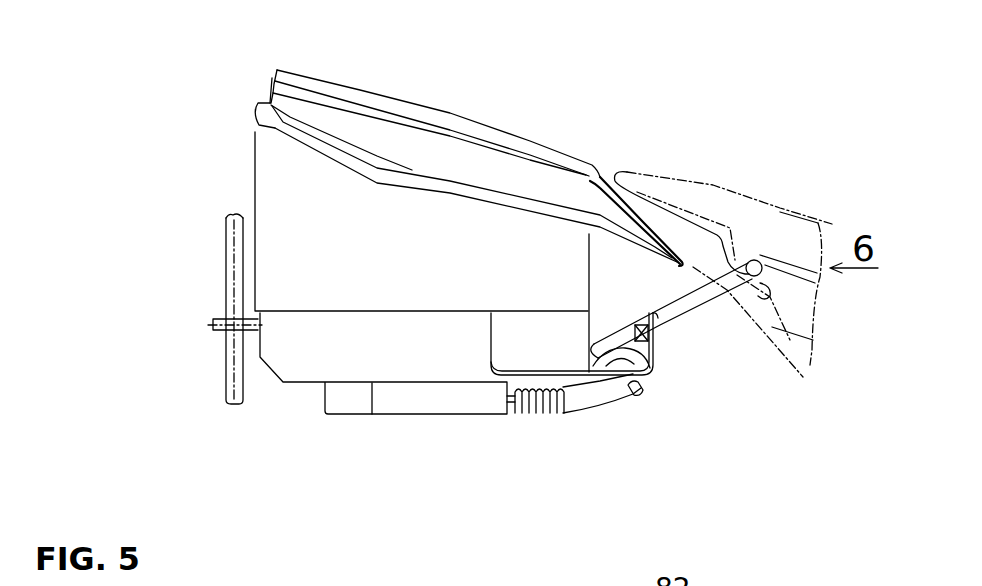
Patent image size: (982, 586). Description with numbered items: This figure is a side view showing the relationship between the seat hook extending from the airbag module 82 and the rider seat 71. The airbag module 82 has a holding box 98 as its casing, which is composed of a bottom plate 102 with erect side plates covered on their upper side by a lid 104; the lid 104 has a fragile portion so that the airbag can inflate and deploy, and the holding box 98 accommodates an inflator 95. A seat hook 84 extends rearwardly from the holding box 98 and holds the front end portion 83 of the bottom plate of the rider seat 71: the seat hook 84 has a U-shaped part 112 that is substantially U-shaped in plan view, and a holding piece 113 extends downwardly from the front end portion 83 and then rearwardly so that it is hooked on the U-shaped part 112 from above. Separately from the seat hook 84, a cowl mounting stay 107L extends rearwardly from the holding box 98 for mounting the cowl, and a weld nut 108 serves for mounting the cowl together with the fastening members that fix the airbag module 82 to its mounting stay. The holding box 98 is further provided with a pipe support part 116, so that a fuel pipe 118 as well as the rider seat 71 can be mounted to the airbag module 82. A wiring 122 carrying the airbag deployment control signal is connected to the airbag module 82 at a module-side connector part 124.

The airbag module 82 is at (589, 112).
The lid 104 is at (450, 118).
The holding box 98 is at (286, 197).
The front end portion 83 is at (711, 180).
The U-shaped part 112 is at (751, 262).
The rider seat 71 is at (818, 221).
The holding piece 113 is at (772, 293).
The seat hook 84 is at (695, 300).
The weld nut 108 is at (657, 385).
The cowl mounting stay 107L is at (660, 334).
The connector part 124 is at (645, 392).
The wiring 122 is at (541, 417).
The inflator 95 is at (338, 408).
The bottom plate 102 is at (372, 386).
The fuel pipe 118 is at (226, 381).
The pipe support part 116 is at (213, 321).